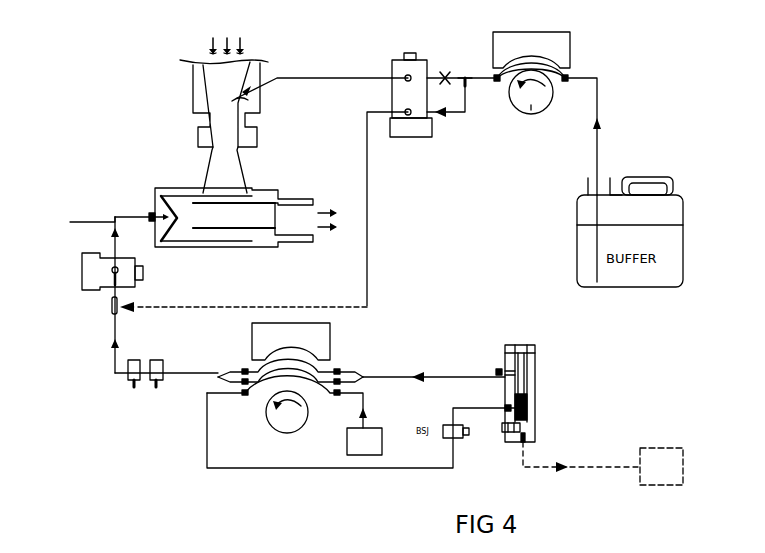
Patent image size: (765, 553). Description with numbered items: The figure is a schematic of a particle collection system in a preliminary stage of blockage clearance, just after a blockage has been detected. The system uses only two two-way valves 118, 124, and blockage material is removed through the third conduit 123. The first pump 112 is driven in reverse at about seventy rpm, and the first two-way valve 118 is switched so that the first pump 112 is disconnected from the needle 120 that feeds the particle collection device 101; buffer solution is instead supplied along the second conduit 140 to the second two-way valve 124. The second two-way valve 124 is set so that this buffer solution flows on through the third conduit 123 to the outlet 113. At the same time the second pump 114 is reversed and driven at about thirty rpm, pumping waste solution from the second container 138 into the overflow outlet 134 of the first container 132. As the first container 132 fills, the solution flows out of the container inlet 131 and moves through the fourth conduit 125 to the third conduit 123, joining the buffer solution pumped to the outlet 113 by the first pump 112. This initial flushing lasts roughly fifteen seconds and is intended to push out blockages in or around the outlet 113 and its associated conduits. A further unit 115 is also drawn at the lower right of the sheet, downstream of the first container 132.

The particle collection device 101 is at (257, 183).
The first pump 112 is at (567, 53).
The outlet 113 is at (152, 213).
The second pump 114 is at (330, 345).
The detector/collection unit 115 is at (662, 457).
The first two-way valve 118 is at (393, 60).
The needle 120 is at (262, 102).
The third conduit 123 is at (78, 294).
The second two-way valve 124 is at (82, 272).
The fourth conduit 125 is at (178, 373).
The container inlet 131 is at (498, 369).
The first container 132 is at (537, 378).
The overflow outlet 134 is at (506, 411).
The second container 138 is at (362, 445).
The second conduit 140 is at (367, 227).